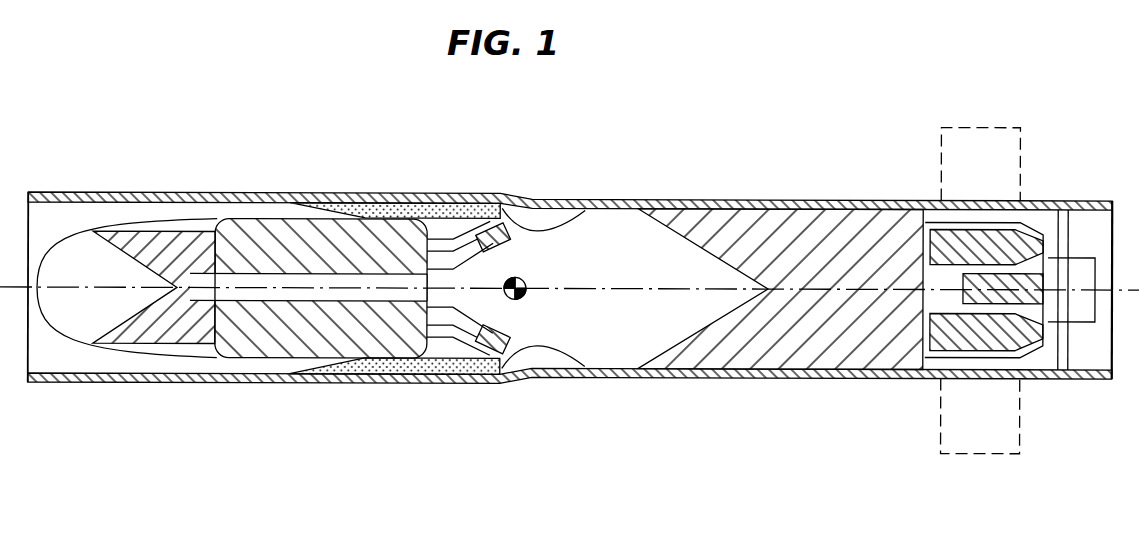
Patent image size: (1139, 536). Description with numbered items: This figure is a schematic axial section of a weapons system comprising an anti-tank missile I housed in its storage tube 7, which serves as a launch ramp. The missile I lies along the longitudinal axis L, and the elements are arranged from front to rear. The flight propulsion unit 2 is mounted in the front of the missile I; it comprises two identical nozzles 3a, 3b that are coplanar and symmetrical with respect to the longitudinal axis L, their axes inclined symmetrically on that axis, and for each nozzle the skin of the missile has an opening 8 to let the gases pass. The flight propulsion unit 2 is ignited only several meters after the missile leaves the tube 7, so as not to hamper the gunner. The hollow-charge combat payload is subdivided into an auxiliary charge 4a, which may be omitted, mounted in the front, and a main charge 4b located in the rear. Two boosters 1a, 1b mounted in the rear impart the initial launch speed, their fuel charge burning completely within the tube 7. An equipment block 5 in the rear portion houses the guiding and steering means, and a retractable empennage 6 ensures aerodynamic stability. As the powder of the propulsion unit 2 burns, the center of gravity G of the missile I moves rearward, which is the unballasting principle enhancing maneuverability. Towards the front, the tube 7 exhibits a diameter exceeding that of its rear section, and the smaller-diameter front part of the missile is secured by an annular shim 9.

The storage tube 7 is at (135, 193).
The auxiliary charge 4a is at (181, 243).
The flight propulsion unit 2 is at (360, 358).
The annular shim 9 is at (437, 204).
The nozzle 3a is at (508, 218).
The nozzle 3b is at (490, 355).
The opening 8 is at (516, 276).
The center of gravity G is at (530, 224).
The missile I is at (618, 270).
The main charge 4b is at (822, 376).
The booster 1a is at (1036, 232).
The booster 1b is at (1043, 350).
The equipment block 5 is at (1045, 299).
The retractable empennage 6 is at (976, 143).
The longitudinal axis L is at (569, 279).